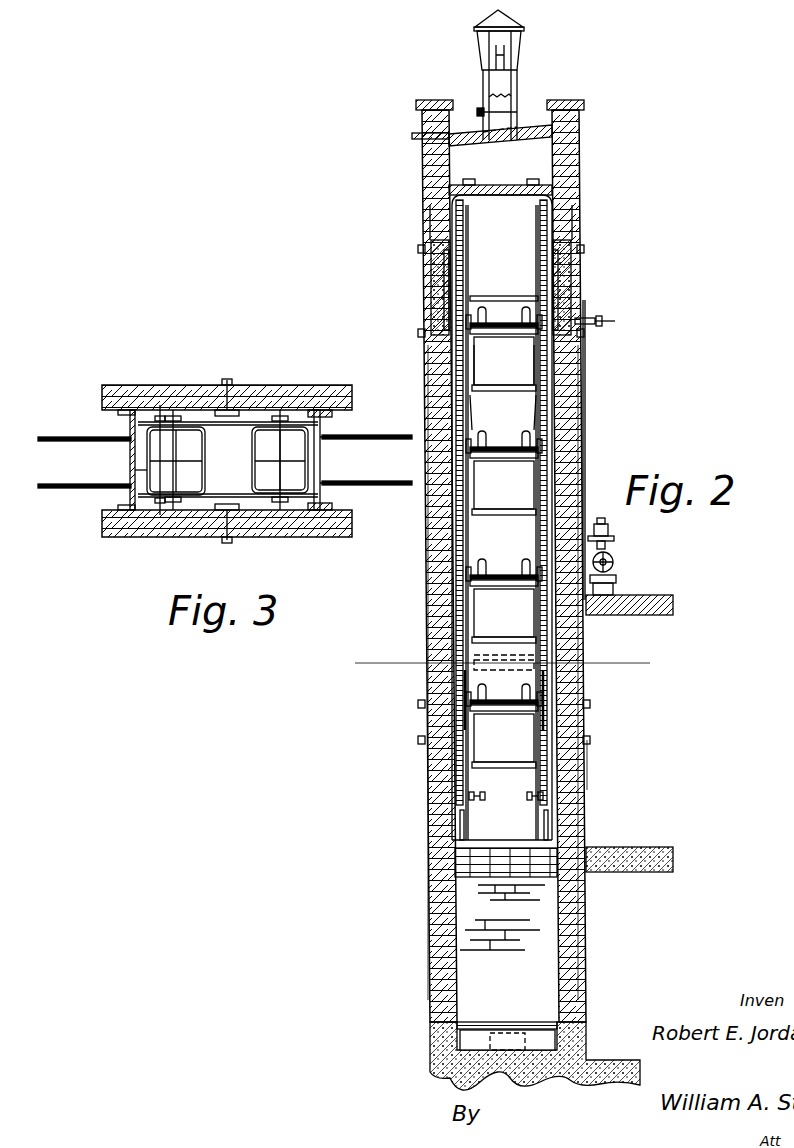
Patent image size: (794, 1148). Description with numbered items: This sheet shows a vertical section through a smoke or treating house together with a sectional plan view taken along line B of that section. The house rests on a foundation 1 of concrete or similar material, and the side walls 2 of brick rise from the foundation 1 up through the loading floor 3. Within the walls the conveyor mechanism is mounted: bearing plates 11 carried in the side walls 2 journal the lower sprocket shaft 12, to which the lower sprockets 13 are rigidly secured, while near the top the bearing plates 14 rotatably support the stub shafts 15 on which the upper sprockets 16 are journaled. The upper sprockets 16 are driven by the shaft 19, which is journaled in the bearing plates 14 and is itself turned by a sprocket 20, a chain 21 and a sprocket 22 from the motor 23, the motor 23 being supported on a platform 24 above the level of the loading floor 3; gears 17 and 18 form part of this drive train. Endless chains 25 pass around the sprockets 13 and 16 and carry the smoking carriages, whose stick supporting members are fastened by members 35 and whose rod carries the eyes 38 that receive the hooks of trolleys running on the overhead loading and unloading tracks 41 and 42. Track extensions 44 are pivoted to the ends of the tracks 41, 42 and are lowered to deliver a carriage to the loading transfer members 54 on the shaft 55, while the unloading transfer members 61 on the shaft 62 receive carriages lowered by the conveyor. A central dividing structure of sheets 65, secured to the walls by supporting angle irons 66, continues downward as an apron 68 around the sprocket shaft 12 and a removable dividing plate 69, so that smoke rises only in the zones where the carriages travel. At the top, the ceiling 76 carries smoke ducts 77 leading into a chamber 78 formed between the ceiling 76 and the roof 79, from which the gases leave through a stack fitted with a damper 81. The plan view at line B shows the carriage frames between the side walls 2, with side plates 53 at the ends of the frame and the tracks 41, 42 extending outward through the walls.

In FIG. 2, the foundation 1 is at (500, 1076).
In FIG. 2, the side walls 2 is at (428, 822).
In FIG. 3, the side walls 2 is at (298, 385).
In FIG. 2, the loading floor 3 is at (640, 847).
In FIG. 2, the bearing plates 11 is at (430, 684).
In FIG. 2, the sprocket shaft 12 is at (492, 716).
In FIG. 2, the lower sprockets 13 is at (538, 770).
In FIG. 2, the bearing plates 14 is at (440, 286).
In FIG. 2, the stub shafts 15 is at (540, 258).
In FIG. 2, the upper sprockets 16 is at (466, 230).
In FIG. 2, the gear 17 is at (430, 220).
In FIG. 2, the gear 18 is at (428, 362).
In FIG. 3, the gear 18 is at (218, 494).
In FIG. 2, the shaft 19 is at (505, 318).
In FIG. 2, the sprocket 20 is at (590, 318).
In FIG. 2, the chain 21 is at (586, 402).
In FIG. 2, the sprocket 22 is at (612, 540).
In FIG. 2, the motor 23 is at (614, 566).
In FIG. 2, the platform 24 is at (650, 596).
In FIG. 2, the endless chains 25 is at (545, 402).
In FIG. 2, the members 35 is at (514, 330).
In FIG. 3, the members 35 is at (182, 450).
In FIG. 2, the carriage supporting members or eyes 38 is at (524, 698).
In FIG. 3, the loading track 41 is at (385, 436).
In FIG. 3, the unloading track 42 is at (58, 437).
In FIG. 3, the track extensions 44 is at (340, 436).
In FIG. 3, the side plate 53 is at (92, 437).
In FIG. 3, the loading transfer members 54 is at (326, 410).
In FIG. 3, the shaft 55 is at (321, 460).
In FIG. 2, the unloading transfer members 61 is at (586, 724).
In FIG. 3, the unloading transfer members 61 is at (215, 408).
In FIG. 3, the shaft 62 is at (140, 470).
In FIG. 2, the sheets 65 is at (484, 296).
In FIG. 2, the supporting angle irons 66 is at (520, 392).
In FIG. 2, the apron 68 is at (584, 656).
In FIG. 2, the removable dividing plate 69 is at (586, 764).
In FIG. 2, the ceiling 76 is at (506, 185).
In FIG. 2, the smoke or gas ducts 77 is at (469, 180).
In FIG. 2, the chamber 78 is at (517, 97).
In FIG. 2, the roof 79 is at (426, 102).
In FIG. 2, the damper 81 is at (477, 110).
In FIG. 2, the section line B is at (507, 662).